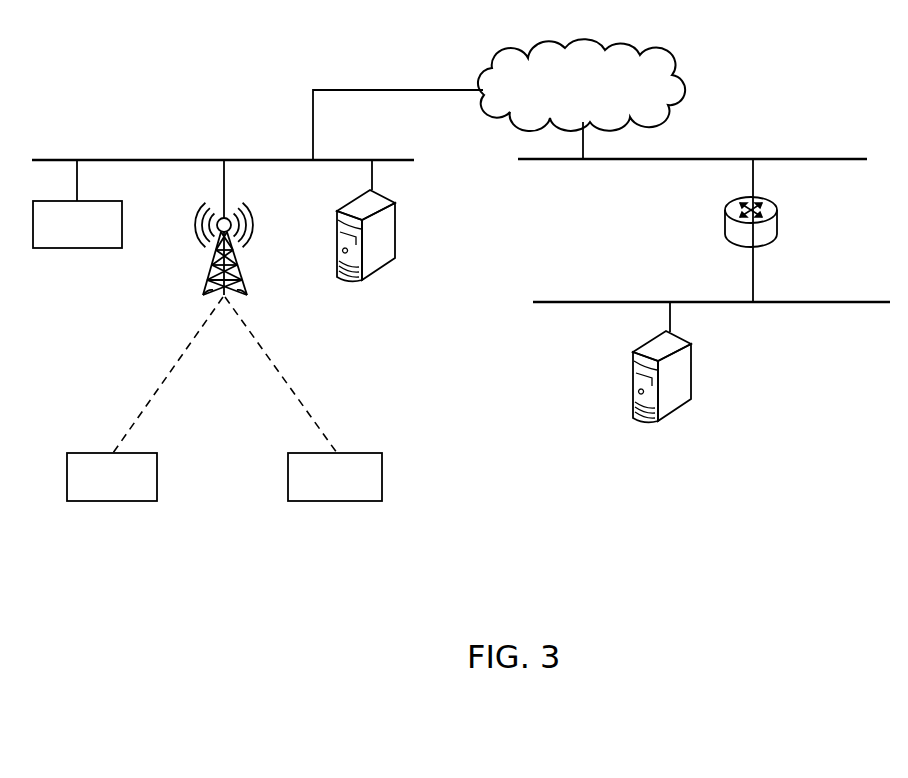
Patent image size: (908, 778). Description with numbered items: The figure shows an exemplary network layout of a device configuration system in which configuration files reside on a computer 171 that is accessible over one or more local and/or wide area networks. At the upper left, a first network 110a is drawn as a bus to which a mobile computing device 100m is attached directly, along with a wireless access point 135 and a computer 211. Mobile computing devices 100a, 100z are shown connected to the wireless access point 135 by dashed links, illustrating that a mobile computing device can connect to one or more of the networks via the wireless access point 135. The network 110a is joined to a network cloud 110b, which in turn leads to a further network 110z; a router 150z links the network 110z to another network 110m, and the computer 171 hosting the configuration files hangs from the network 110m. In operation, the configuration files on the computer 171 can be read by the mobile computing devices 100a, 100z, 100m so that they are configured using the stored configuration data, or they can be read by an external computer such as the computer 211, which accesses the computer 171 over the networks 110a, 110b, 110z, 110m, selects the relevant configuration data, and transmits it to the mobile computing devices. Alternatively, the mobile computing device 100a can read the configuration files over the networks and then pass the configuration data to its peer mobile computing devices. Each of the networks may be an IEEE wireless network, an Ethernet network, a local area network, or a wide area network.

The network 110a is at (257, 125).
The mobile computing device 100m is at (77, 204).
The wireless access point 135 is at (225, 306).
The computer 211 is at (376, 228).
The network 110b is at (581, 99).
The network 110z is at (692, 145).
The router 150z is at (776, 230).
The network 110m is at (711, 288).
The computer 171 is at (676, 376).
The mobile computing device 100a is at (112, 477).
The mobile computing device 100z is at (335, 477).